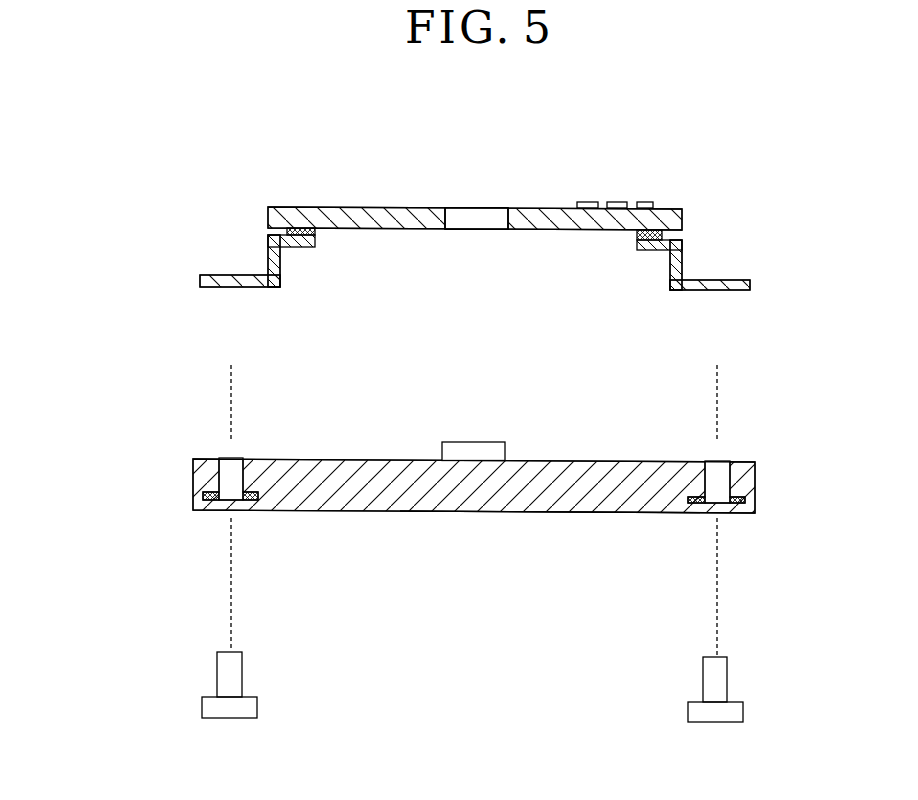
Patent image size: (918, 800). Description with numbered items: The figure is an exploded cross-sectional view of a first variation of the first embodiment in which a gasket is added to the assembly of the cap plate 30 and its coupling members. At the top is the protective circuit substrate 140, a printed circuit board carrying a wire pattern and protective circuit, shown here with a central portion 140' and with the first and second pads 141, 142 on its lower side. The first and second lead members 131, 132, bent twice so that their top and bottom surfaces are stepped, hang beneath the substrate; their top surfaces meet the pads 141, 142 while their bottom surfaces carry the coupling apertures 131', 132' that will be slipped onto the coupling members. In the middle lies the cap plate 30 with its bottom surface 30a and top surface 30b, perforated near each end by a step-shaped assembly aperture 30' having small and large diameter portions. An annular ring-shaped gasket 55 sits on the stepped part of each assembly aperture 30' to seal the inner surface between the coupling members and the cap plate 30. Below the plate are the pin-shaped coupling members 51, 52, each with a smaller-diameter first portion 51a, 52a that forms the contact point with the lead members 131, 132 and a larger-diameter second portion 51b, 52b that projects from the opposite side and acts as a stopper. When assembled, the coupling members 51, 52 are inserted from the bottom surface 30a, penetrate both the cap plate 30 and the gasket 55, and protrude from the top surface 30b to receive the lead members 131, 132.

The cap plate 30 is at (507, 505).
The bottom surface 30a is at (550, 513).
The top surface 30b is at (545, 462).
The assembly aperture 30' is at (474, 520).
The gasket 55 is at (755, 500).
The coupling member 51 is at (779, 700).
The first portion 51a is at (722, 692).
The second portion 51b is at (735, 708).
The coupling member 52 is at (168, 691).
The first portion 52a is at (216, 690).
The second portion 52b is at (205, 703).
The first lead member 131 is at (698, 265).
The coupling aperture 131' is at (710, 318).
The second lead member 132 is at (314, 261).
The coupling aperture 132' is at (240, 313).
The protective circuit substrate 140 is at (475, 178).
The opening of circuit board 140' is at (476, 178).
The first pad 141 is at (650, 231).
The second pad 142 is at (300, 231).